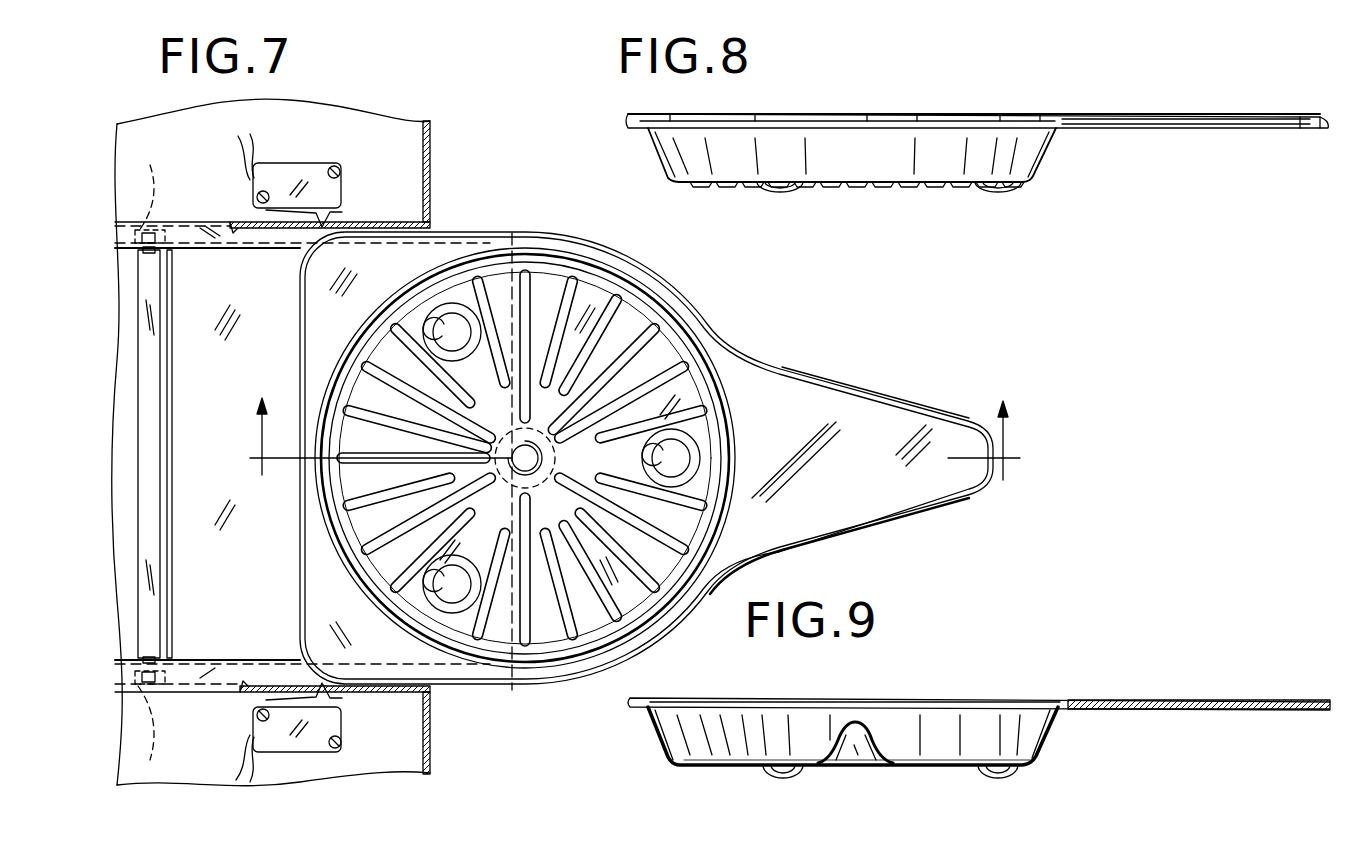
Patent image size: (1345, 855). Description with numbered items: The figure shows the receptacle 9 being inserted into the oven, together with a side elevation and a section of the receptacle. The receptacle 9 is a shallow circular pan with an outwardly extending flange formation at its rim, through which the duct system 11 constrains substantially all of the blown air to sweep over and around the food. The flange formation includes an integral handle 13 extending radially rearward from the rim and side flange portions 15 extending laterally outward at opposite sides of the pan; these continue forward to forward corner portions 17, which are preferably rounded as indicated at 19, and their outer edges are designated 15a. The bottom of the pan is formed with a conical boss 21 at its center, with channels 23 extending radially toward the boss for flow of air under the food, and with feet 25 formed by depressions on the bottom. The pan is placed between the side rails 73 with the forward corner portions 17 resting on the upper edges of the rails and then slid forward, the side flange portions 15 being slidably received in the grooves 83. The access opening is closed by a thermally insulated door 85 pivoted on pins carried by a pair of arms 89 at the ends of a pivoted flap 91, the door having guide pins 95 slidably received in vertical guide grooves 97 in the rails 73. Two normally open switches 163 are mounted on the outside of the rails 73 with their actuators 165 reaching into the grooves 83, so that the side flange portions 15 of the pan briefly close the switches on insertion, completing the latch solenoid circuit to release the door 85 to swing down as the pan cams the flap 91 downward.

In FIG. 7, the receptacle 9 is at (703, 264).
In FIG. 8, the receptacle 9 is at (650, 150).
In FIG. 9, the receptacle 9 is at (658, 742).
In FIG. 7, the duct system 11 is at (298, 371).
In FIG. 8, the duct system 11 is at (632, 124).
In FIG. 9, the duct system 11 is at (634, 700).
In FIG. 7, the handle 13 is at (905, 520).
In FIG. 8, the handle 13 is at (1205, 114).
In FIG. 9, the handle 13 is at (1200, 700).
In FIG. 7, the side flange portions 15 is at (450, 240).
In FIG. 8, the side flange portions 15 is at (818, 136).
In FIG. 7, the outer edges of the side flange portions 15a is at (530, 250).
In FIG. 7, the forward corner portions 17 is at (352, 267).
In FIG. 7, the rounded corners 19 is at (300, 273).
In FIG. 7, the conical boss 21 is at (545, 458).
In FIG. 9, the conical boss 21 is at (868, 725).
In FIG. 7, the channels 23 is at (655, 350).
In FIG. 9, the channels 23 is at (742, 760).
In FIG. 7, the feet 25 is at (451, 330).
In FIG. 8, the feet 25 is at (780, 194).
In FIG. 9, the feet 25 is at (785, 778).
In FIG. 7, the side rails 73 is at (497, 243).
In FIG. 7, the grooves 83 is at (360, 228).
In FIG. 7, the door 85 is at (177, 440).
In FIG. 7, the arms 89 is at (200, 247).
In FIG. 7, the flap 91 is at (200, 505).
In FIG. 7, the guide pins 95 is at (150, 255).
In FIG. 7, the guide grooves 97 is at (144, 452).
In FIG. 7, the switches 163 is at (306, 174).
In FIG. 7, the actuators 165 is at (291, 455).